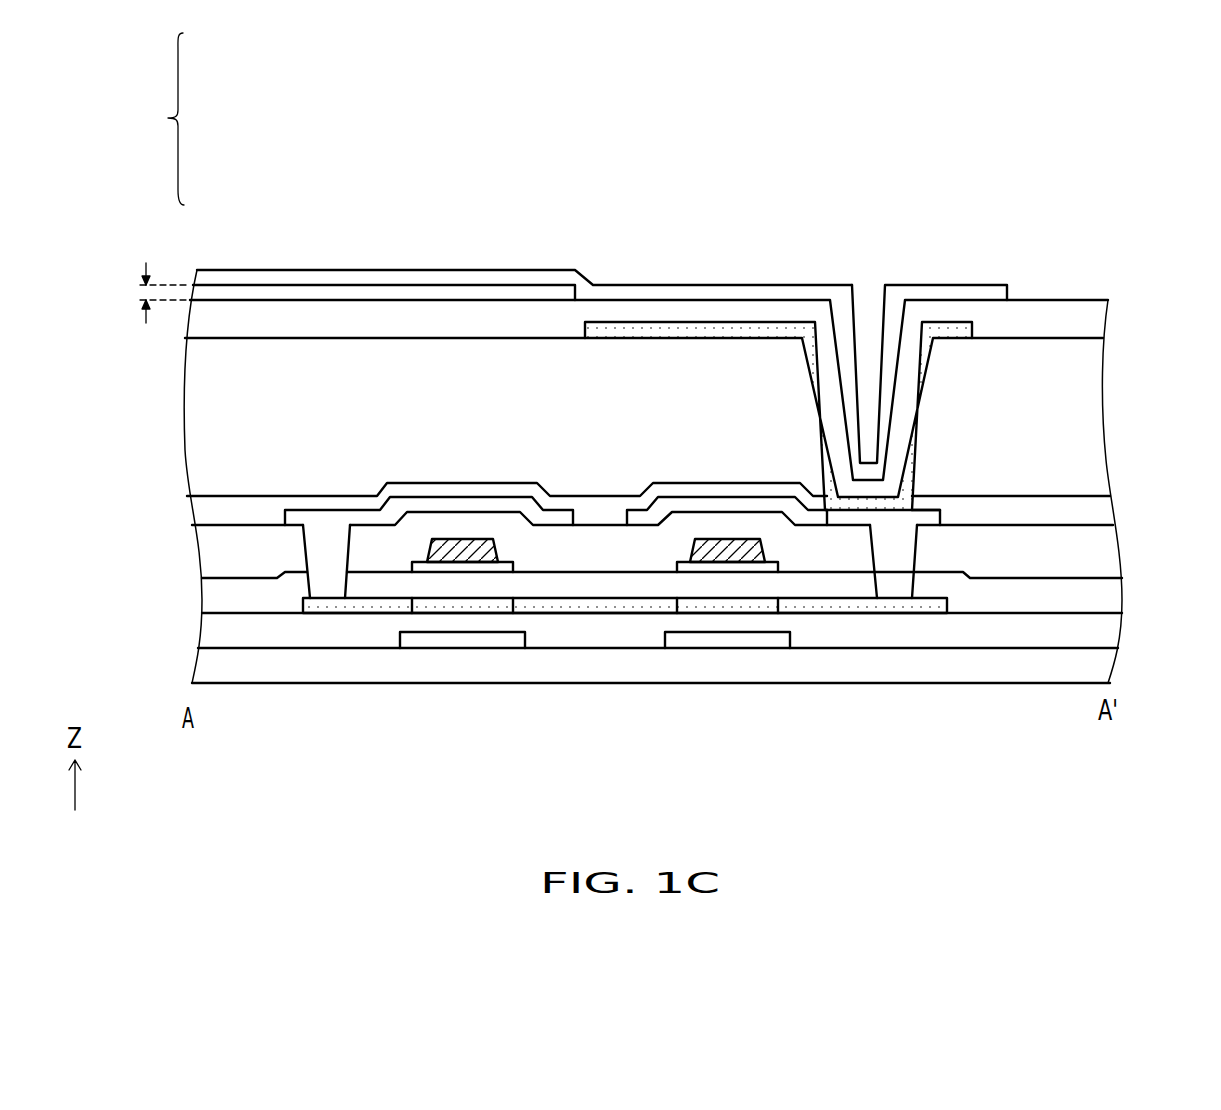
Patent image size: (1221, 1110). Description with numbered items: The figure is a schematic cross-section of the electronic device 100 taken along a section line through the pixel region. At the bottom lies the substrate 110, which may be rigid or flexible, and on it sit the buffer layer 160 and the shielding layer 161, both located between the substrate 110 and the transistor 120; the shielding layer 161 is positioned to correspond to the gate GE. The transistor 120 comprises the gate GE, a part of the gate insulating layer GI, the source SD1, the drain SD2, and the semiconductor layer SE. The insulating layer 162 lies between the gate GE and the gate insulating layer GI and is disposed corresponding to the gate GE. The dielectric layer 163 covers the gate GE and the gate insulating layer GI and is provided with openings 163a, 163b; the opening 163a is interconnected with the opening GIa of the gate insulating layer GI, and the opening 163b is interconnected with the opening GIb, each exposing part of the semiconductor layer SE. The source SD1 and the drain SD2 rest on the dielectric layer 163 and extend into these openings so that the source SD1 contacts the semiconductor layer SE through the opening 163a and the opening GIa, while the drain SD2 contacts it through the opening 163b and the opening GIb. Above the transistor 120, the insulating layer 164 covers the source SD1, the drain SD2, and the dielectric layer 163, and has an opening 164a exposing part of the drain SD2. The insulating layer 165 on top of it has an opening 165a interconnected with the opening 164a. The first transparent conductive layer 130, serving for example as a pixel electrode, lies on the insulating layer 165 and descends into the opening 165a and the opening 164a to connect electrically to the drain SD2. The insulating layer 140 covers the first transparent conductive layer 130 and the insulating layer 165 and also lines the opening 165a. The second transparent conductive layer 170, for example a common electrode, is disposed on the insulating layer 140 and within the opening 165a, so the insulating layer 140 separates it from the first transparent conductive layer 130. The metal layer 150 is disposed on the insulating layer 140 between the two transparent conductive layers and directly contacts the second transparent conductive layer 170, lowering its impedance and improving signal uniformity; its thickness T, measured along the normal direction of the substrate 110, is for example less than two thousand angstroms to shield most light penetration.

The electronic device 100 is at (1217, 770).
The substrate 110 is at (1092, 669).
The transistor 120 is at (168, 118).
The first transparent conductive layer 130 is at (975, 329).
The insulating layer 140 is at (1093, 321).
The metal layer 150 is at (428, 292).
The buffer layer 160 is at (1092, 634).
The shielding layer 161 is at (502, 640).
The insulating layer 162 is at (458, 565).
The dielectric layer 163 is at (1092, 566).
The opening 163a is at (325, 556).
The opening 163b is at (893, 553).
The insulating layer 164 is at (1093, 513).
The opening 164a is at (898, 508).
The insulating layer 165 is at (1093, 444).
The opening 165a is at (867, 288).
The second transparent conductive layer 170 is at (997, 292).
The gate GE is at (433, 547).
The gate insulating layer GI is at (1092, 600).
The opening GIa is at (327, 591).
The opening GIb is at (909, 583).
The source SD1 is at (293, 518).
The drain SD2 is at (930, 521).
The semiconductor layer SE is at (946, 605).
The thickness T is at (153, 293).